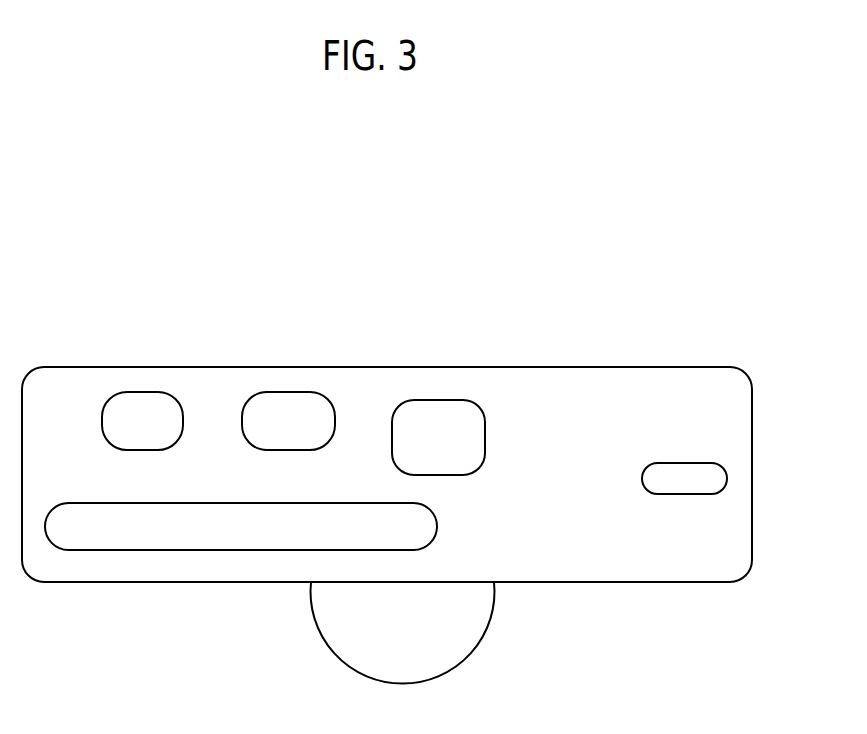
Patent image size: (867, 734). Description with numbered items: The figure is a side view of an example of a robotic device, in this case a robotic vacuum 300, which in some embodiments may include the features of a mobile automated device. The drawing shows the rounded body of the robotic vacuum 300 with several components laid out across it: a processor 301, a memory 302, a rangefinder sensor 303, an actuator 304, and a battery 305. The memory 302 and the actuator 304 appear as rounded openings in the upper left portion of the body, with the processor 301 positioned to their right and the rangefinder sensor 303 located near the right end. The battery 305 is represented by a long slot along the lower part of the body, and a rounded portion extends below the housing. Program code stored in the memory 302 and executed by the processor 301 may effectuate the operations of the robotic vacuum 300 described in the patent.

The robotic vacuum 300 is at (288, 367).
The processor 301 is at (485, 432).
The memory 302 is at (102, 425).
The rangefinder sensor 303 is at (707, 463).
The actuator 304 is at (335, 425).
The battery 305 is at (163, 548).